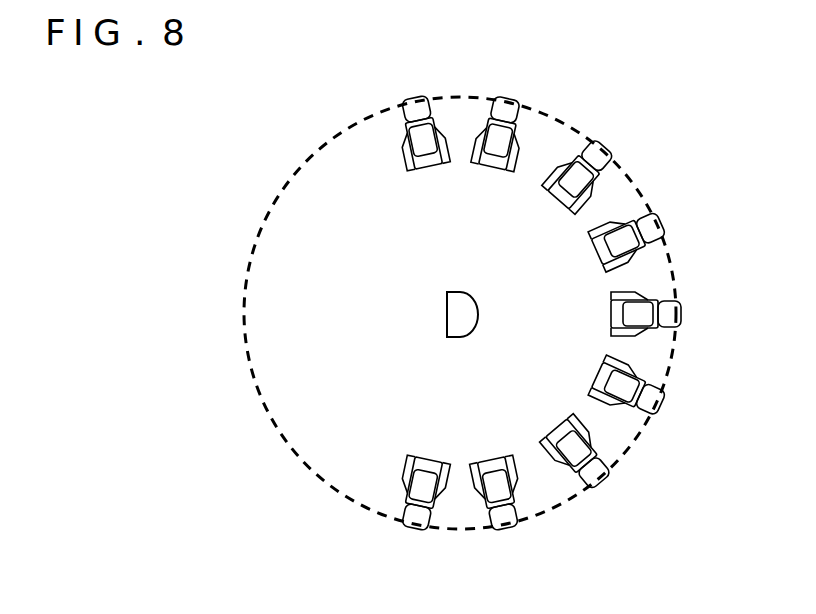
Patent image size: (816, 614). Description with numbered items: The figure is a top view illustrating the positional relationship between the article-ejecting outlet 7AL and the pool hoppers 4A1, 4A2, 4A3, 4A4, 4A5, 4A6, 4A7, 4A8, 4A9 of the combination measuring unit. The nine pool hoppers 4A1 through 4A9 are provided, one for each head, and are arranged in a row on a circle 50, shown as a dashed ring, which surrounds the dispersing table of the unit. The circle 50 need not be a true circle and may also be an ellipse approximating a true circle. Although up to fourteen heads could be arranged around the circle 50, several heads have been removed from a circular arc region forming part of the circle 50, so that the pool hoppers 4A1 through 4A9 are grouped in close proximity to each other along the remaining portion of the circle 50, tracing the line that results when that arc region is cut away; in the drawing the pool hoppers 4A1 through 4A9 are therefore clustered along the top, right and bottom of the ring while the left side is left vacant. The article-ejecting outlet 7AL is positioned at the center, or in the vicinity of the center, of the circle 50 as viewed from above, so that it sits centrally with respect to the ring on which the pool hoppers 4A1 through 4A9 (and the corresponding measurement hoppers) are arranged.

The circle 50 is at (323, 141).
The article-ejecting outlet 7AL is at (457, 315).
The pool hopper 4A1 is at (406, 534).
The pool hopper 4A2 is at (505, 534).
The pool hopper 4A3 is at (604, 492).
The pool hopper 4A4 is at (667, 407).
The pool hopper 4A5 is at (685, 312).
The pool hopper 4A6 is at (668, 220).
The pool hopper 4A7 is at (604, 138).
The pool hopper 4A8 is at (512, 96).
The pool hopper 4A9 is at (420, 65).